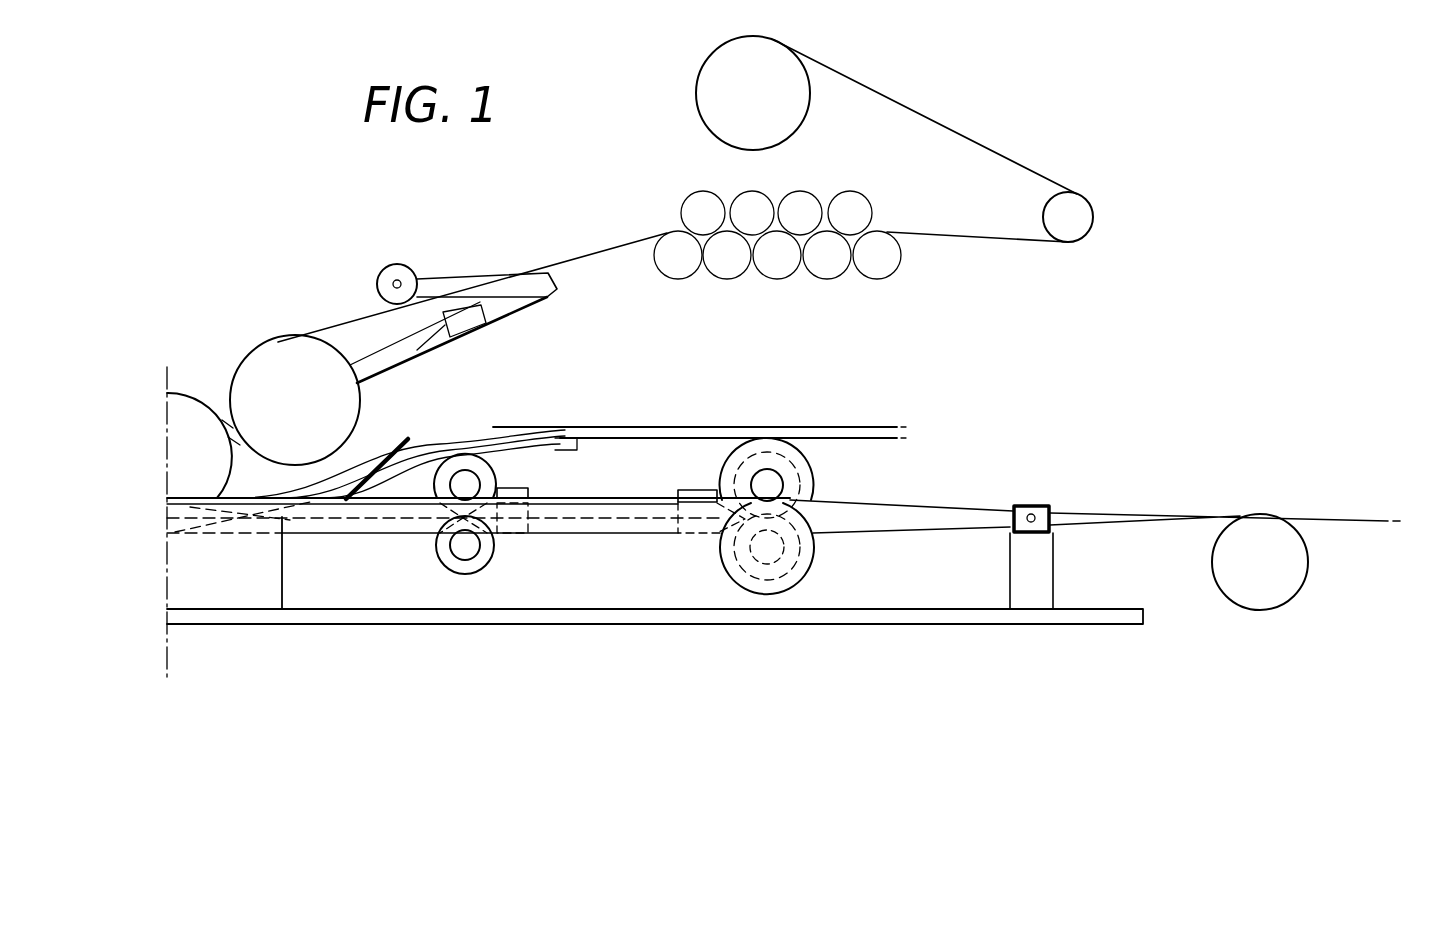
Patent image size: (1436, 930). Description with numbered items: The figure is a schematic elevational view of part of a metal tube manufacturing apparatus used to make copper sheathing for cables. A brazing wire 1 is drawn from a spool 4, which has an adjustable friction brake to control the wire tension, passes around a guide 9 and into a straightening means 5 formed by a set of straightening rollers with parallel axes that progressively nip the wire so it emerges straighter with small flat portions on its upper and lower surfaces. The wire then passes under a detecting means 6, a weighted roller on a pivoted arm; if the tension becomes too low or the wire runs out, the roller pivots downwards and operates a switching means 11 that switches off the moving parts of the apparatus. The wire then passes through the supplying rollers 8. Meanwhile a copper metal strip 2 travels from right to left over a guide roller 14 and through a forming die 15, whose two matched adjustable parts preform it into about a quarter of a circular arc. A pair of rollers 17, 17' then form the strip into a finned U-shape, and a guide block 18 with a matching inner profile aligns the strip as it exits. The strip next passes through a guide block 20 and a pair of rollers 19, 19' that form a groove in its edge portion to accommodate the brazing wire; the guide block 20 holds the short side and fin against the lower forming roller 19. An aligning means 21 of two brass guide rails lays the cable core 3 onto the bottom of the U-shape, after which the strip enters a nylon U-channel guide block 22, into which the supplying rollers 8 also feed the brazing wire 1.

The brazing wire 1 is at (920, 113).
The metal strip 2 is at (1352, 518).
The cable core 3 is at (877, 428).
The spool 4 is at (767, 70).
The straightening means 5 is at (680, 207).
The detecting means 6 is at (398, 270).
The supplying rollers 8 is at (257, 370).
The guide 9 is at (1073, 203).
The switching means 11 is at (480, 305).
The guide roller 14 is at (1260, 523).
The forming die 15 is at (1037, 505).
The forming roller 17 is at (797, 437).
The forming roller 17' is at (801, 550).
The guide block 18 is at (697, 490).
The lower forming roller 19 is at (507, 433).
The groove forming roller 19' is at (464, 594).
The guide block 20 is at (525, 488).
The aligning means 21 is at (390, 437).
The U-channel guide block 22 is at (268, 578).